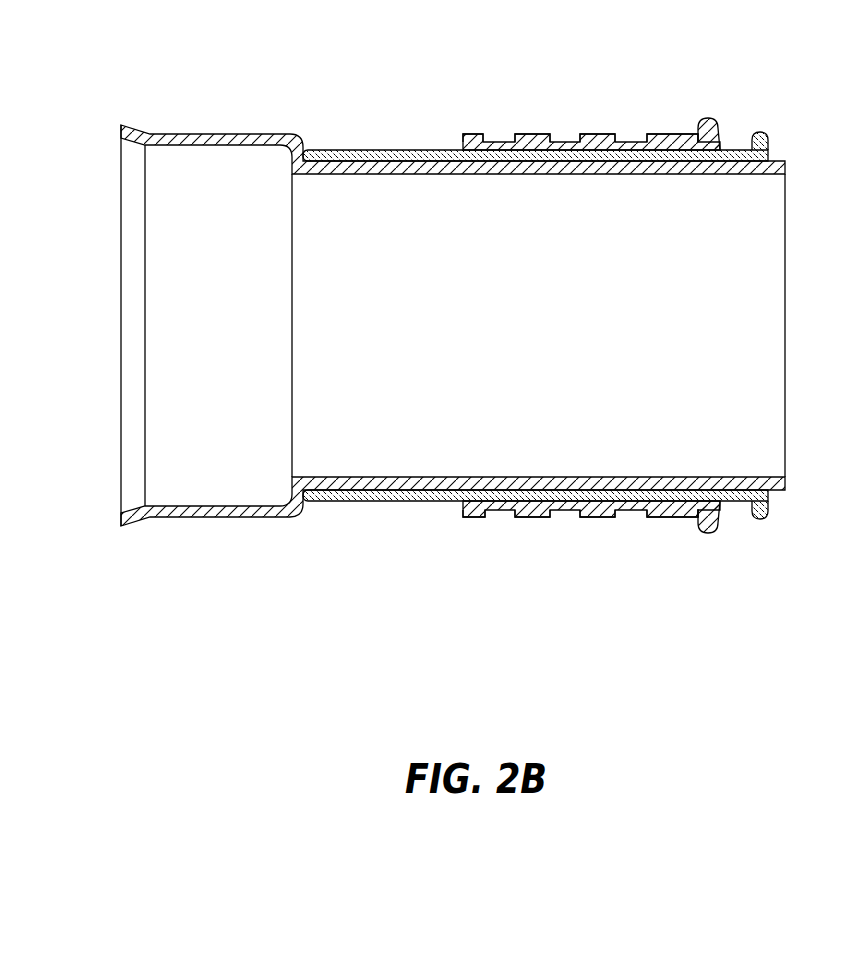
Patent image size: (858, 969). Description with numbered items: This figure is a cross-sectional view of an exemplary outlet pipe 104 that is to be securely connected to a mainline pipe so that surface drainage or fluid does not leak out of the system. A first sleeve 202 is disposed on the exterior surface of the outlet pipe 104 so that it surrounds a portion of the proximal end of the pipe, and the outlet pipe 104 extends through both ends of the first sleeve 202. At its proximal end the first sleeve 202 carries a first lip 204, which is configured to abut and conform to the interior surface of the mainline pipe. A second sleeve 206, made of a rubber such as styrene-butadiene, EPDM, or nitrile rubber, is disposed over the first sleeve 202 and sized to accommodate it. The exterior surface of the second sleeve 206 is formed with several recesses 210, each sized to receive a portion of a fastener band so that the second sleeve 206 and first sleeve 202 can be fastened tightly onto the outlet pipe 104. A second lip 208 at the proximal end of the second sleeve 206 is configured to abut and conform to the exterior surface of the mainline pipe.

The outlet pipe 104 is at (196, 330).
The first sleeve 202 is at (390, 514).
The first lip 204 is at (760, 520).
The second sleeve 206 is at (531, 123).
The second lip 208 is at (700, 120).
The recess 210 is at (497, 517).